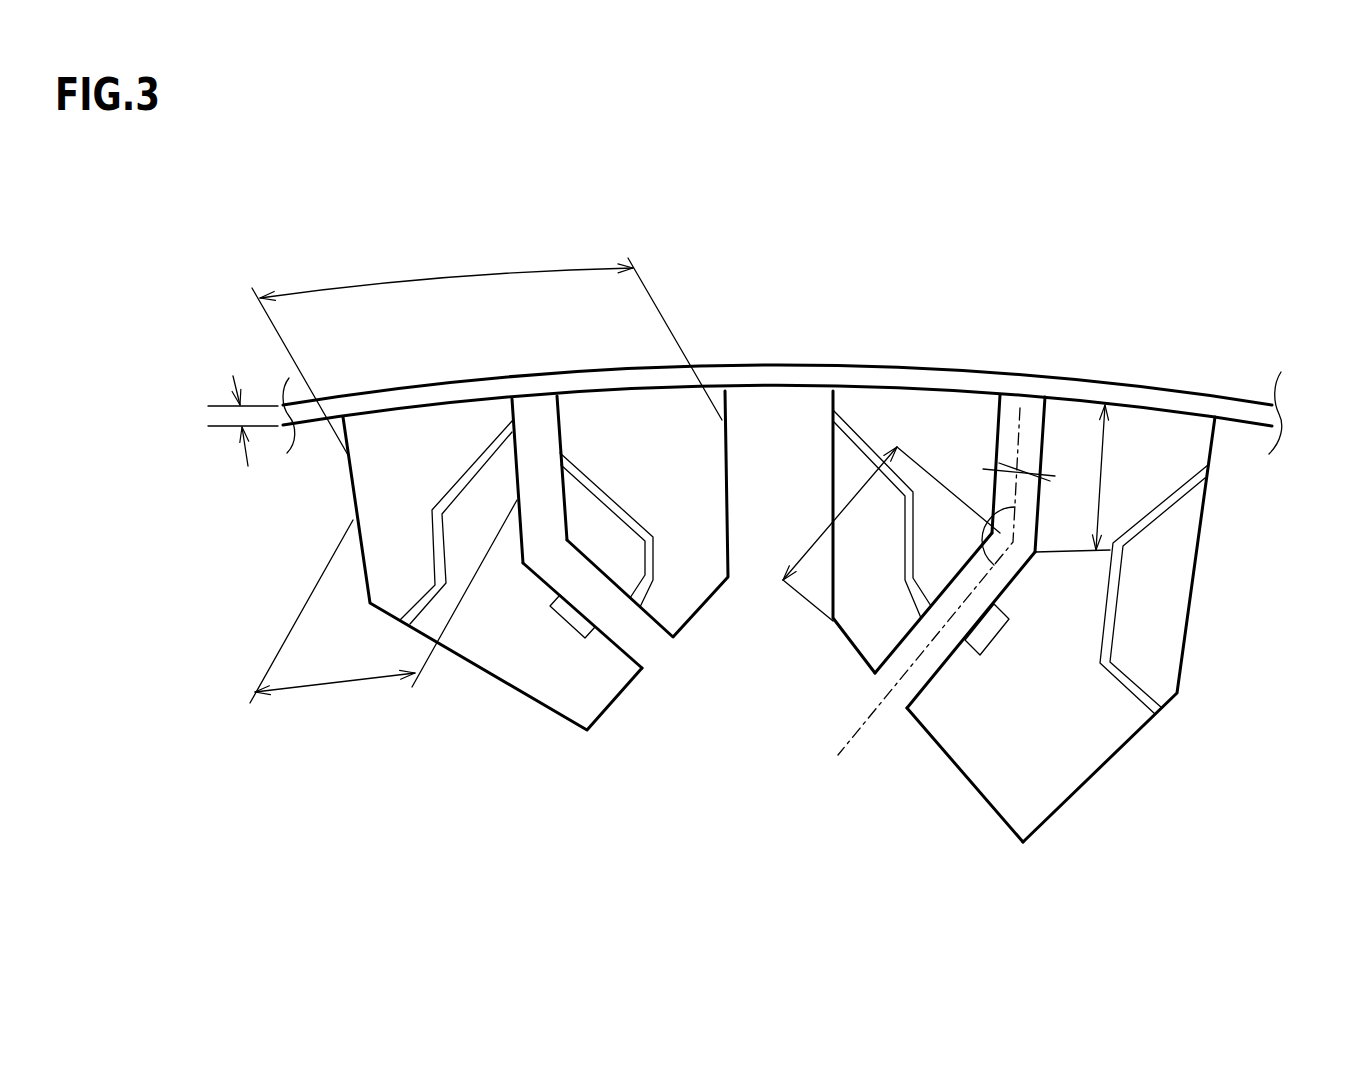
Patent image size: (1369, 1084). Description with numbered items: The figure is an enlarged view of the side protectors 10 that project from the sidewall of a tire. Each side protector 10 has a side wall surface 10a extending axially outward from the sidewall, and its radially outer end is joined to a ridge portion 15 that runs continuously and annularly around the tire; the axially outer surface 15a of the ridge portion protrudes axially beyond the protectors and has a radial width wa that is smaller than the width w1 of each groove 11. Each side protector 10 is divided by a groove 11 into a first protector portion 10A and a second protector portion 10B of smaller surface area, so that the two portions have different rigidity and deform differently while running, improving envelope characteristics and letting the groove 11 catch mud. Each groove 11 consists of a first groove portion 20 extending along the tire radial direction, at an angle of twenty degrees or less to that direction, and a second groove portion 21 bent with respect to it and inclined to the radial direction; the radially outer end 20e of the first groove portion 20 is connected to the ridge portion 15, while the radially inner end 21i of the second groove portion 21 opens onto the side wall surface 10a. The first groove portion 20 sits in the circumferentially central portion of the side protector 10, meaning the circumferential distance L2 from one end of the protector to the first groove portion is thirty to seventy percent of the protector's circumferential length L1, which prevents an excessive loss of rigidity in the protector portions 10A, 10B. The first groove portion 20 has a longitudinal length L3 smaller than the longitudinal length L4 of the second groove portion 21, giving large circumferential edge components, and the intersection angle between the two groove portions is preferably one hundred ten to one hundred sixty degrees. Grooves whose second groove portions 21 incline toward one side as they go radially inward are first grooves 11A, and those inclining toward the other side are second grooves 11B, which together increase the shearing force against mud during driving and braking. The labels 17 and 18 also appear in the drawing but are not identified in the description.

The side protector 10 is at (1205, 752).
The first protector portion 10A is at (1040, 778).
The second protector portion 10B is at (887, 413).
The side wall surface 10a is at (988, 807).
The groove 11 is at (630, 630).
The first groove 11A is at (1024, 566).
The second groove 11B is at (610, 613).
The ridge portion 15 is at (1240, 406).
The axially outer surface 15a is at (304, 385).
The back yoke 17 is at (1183, 322).
The tooth unit 18 is at (353, 263).
The first groove portion 20 is at (533, 415).
The radially outer end 20e is at (1040, 398).
The second groove portion 21 is at (587, 595).
The radially inner end 21i is at (898, 703).
The length L1 is at (487, 348).
The distance L2 is at (383, 612).
The length L3 is at (1102, 477).
The length L4 is at (853, 497).
The radial width wa is at (233, 421).
The width w1 is at (540, 578).